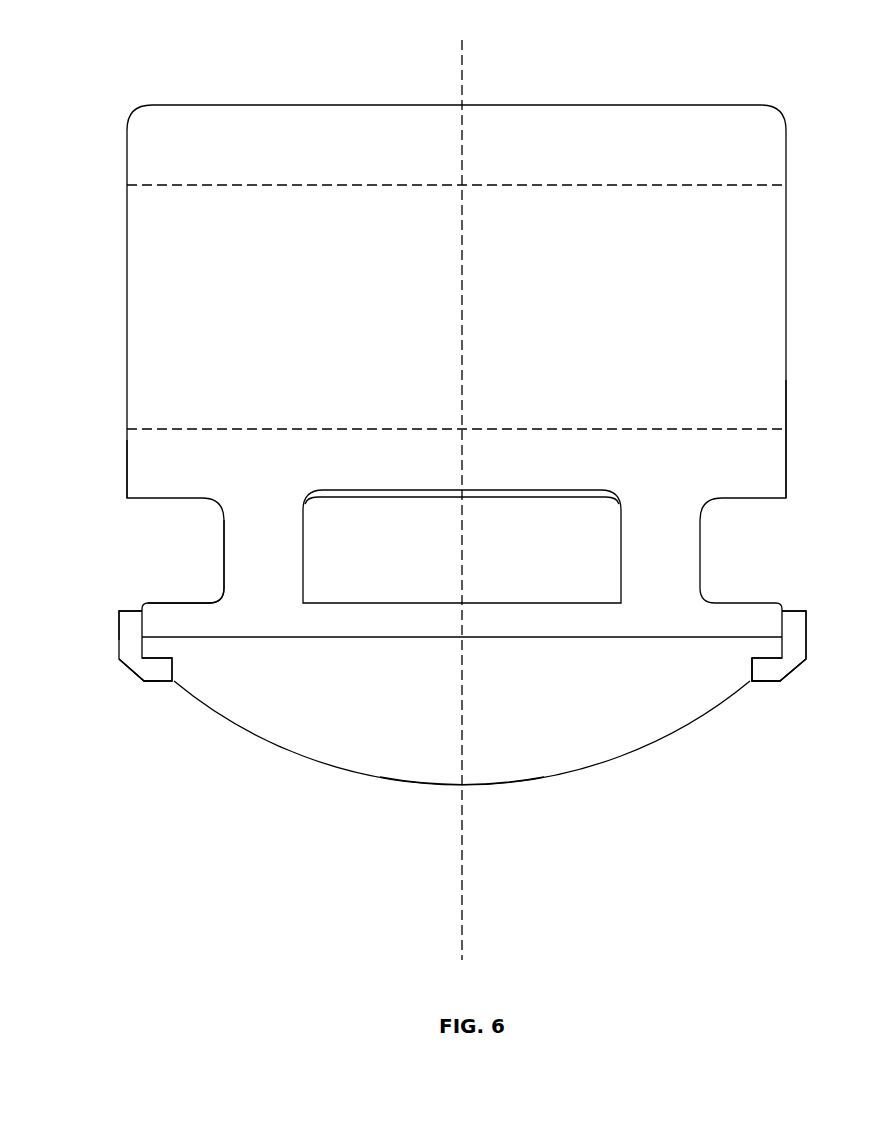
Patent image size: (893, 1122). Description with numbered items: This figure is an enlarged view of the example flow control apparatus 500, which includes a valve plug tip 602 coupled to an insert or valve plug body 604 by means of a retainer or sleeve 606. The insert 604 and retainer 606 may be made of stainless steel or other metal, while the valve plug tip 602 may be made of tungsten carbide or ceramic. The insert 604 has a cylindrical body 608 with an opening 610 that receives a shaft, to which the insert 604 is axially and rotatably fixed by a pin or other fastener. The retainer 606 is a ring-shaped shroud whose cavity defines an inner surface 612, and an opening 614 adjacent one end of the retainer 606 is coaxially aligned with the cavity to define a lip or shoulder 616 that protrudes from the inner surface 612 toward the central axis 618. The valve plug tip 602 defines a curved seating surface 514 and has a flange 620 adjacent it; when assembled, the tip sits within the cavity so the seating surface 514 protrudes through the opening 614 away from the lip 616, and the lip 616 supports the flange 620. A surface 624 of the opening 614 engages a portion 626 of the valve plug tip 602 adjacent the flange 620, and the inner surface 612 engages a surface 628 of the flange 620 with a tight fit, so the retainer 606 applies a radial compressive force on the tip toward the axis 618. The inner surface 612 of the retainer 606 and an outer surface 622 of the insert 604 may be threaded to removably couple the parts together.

The flow control apparatus 500 is at (760, 45).
The valve plug tip 602 is at (625, 750).
The seating surface 514 is at (520, 787).
The insert or valve plug body 604 is at (771, 462).
The retainer or sleeve 606 is at (806, 619).
The body or portion 608 is at (127, 478).
The opening 610 is at (170, 429).
The inner surface or wall 612 is at (150, 600).
The opening 614 is at (185, 687).
The lip or shoulder 616 is at (770, 682).
The longitudinal or central axis 618 is at (462, 893).
The engagement surface or flange 620 is at (153, 651).
The outer surface 622 is at (143, 618).
The surface 624 is at (752, 661).
The surface or portion 626 is at (750, 678).
The surface 628 is at (806, 650).